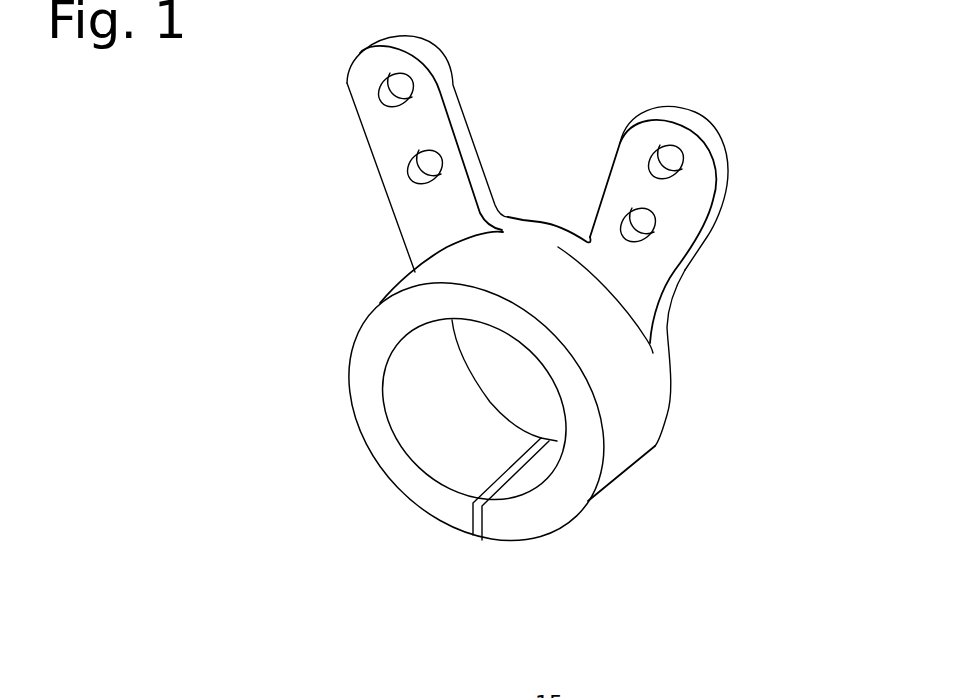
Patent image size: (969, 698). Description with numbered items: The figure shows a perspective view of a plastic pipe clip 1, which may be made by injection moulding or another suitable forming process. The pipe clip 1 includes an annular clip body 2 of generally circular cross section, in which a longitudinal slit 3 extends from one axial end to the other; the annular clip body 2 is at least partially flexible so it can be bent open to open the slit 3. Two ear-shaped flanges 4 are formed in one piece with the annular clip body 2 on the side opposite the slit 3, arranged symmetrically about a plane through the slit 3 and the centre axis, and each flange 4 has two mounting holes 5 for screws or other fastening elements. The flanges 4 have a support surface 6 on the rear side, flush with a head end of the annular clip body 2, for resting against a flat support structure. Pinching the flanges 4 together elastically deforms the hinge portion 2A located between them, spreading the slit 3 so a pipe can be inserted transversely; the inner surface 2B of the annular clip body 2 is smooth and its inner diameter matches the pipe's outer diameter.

The pipe clip 1 is at (748, 207).
The annular clip body 2 is at (630, 437).
The hinge portion 2A is at (533, 248).
The inner surface 2B is at (452, 413).
The longitudinal slit 3 is at (500, 480).
The flanges 4 is at (455, 103).
The mounting holes 5 is at (397, 97).
The support surface 6 is at (508, 216).